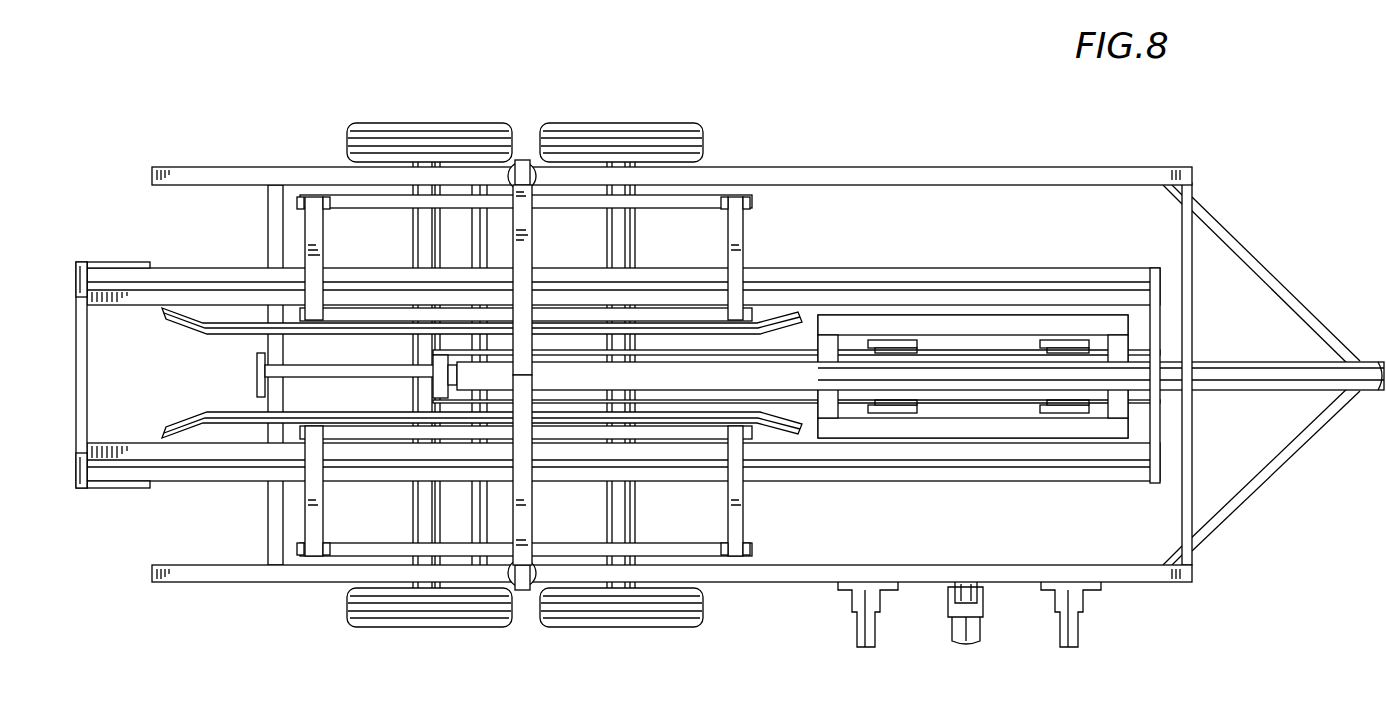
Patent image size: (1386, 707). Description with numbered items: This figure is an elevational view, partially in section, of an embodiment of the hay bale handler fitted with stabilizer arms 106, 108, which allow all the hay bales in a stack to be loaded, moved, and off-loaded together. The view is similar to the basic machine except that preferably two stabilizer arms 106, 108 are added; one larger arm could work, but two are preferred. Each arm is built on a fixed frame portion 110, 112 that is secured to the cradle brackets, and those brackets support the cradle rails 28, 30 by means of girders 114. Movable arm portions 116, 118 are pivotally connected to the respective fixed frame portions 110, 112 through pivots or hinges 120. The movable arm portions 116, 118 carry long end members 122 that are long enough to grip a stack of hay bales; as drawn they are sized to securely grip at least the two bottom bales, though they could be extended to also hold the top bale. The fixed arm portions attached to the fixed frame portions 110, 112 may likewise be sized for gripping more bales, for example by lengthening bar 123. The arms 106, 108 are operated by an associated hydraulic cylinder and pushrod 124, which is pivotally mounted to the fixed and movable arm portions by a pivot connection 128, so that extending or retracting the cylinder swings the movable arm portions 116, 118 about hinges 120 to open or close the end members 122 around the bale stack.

The cradle rail 28 is at (167, 480).
The cradle rail 30 is at (163, 277).
The stabilizer arm 106 is at (707, 202).
The stabilizer arm 108 is at (710, 547).
The fixed frame portion 110 is at (355, 548).
The fixed frame portion 112 is at (355, 202).
The girder 114 is at (300, 232).
The movable arm portion 116 is at (517, 523).
The movable arm portion 118 is at (520, 220).
The pivot or hinge 120 is at (300, 195).
The long end member 122 is at (212, 410).
The bar 123 is at (652, 202).
The hydraulic cylinder and pushrod 124 is at (537, 165).
The pivot connection 128 is at (523, 592).